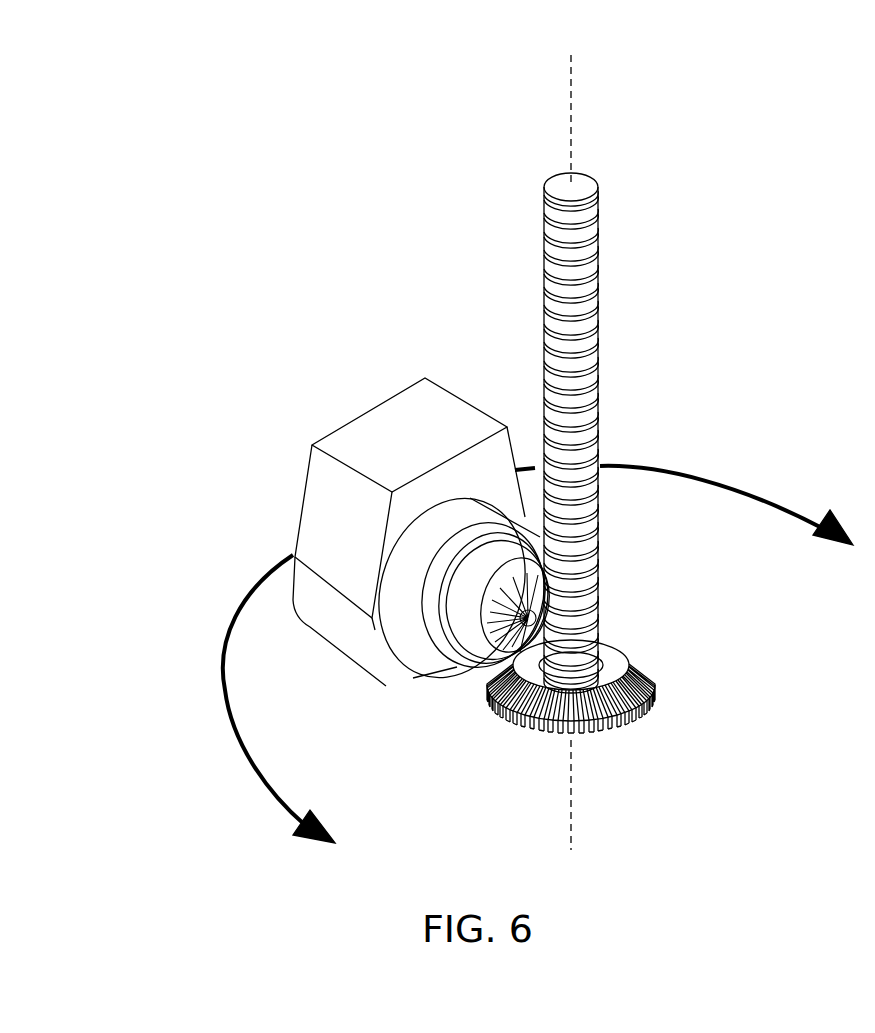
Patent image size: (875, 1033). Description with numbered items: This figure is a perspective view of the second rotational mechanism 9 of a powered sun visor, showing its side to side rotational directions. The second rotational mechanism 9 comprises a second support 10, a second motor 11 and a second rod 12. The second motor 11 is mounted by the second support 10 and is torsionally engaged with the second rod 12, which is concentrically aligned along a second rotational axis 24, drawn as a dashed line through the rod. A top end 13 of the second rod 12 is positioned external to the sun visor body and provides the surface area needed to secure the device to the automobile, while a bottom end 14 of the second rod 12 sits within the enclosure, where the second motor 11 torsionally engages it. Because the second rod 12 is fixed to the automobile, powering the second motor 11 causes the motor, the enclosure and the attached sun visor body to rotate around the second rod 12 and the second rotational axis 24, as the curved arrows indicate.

The second rotational mechanism 9 is at (195, 481).
The second support 10 is at (373, 422).
The second motor 11 is at (450, 667).
The second rod 12 is at (597, 388).
The top end 13 is at (637, 203).
The bottom end 14 is at (610, 588).
The second rotational axis 24 is at (571, 124).